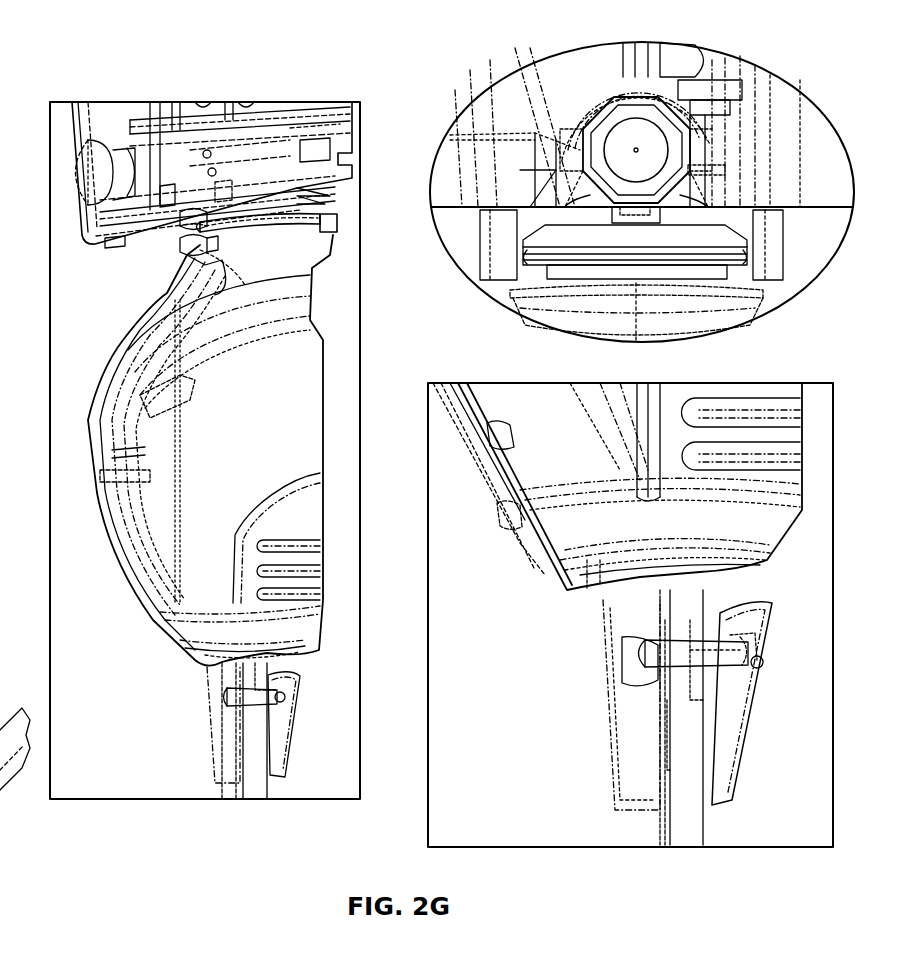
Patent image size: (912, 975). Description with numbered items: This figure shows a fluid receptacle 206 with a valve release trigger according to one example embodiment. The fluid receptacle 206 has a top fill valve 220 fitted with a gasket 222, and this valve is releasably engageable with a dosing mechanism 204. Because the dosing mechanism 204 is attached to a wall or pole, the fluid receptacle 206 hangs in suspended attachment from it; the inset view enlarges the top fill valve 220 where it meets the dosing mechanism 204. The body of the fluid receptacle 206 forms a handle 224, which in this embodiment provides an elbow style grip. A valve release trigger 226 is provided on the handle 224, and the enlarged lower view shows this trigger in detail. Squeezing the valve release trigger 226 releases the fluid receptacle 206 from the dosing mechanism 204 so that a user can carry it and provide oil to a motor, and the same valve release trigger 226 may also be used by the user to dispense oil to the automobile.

The dosing mechanism 204 is at (575, 62).
The fluid receptacle 206 is at (176, 80).
The top fill valve 220 is at (660, 222).
The gasket 222 is at (337, 226).
The handle 224 is at (115, 567).
The valve release trigger 226 is at (285, 706).